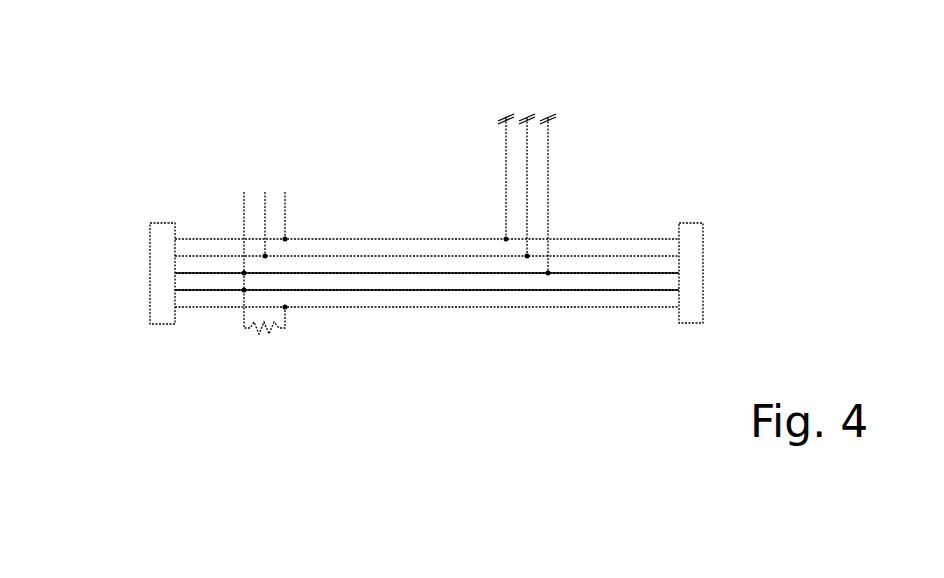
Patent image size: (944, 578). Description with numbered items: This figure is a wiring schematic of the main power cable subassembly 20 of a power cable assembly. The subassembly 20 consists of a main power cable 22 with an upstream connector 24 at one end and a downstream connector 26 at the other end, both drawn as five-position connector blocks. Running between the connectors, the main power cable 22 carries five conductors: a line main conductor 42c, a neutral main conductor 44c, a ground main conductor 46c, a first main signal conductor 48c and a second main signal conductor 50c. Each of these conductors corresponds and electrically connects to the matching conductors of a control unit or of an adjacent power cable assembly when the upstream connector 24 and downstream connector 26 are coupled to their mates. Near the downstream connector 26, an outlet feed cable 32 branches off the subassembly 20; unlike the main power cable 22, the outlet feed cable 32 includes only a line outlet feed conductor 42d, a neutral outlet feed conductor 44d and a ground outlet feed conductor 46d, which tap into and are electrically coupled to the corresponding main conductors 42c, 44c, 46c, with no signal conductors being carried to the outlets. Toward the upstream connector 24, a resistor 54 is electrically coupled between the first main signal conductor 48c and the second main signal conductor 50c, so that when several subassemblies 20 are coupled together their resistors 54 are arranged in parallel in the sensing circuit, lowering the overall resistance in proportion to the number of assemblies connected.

The main power cable subassembly 20 is at (203, 365).
The main power cable 22 is at (342, 135).
The upstream connector 24 is at (202, 205).
The downstream connector 26 is at (677, 197).
The outlet feed cable 32 is at (575, 152).
The line main conductor 42c is at (337, 272).
The neutral main conductor 44c is at (389, 255).
The ground main conductor 46c is at (420, 238).
The first main signal conductor 48c is at (385, 290).
The second main signal conductor 50c is at (443, 307).
The line outlet feed conductor 42d is at (548, 207).
The neutral outlet feed conductor 44d is at (506, 153).
The ground outlet feed conductor 46d is at (527, 208).
The resistor 54 is at (267, 352).